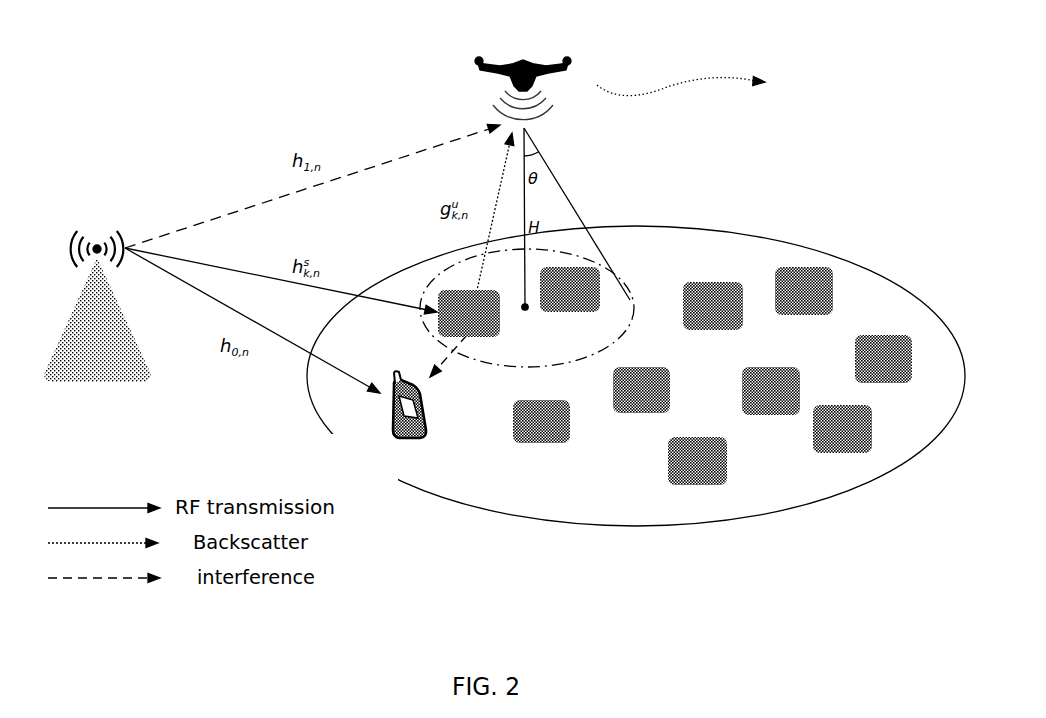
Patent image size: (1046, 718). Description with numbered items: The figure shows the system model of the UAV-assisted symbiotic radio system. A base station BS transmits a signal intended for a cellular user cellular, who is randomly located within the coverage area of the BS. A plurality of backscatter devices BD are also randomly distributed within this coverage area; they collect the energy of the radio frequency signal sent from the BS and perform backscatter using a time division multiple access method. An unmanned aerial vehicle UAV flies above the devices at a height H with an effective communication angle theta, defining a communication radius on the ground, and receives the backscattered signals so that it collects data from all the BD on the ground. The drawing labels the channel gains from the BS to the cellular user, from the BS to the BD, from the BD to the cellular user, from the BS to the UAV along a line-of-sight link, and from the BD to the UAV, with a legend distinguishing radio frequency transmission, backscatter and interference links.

The unmanned aerial vehicle UAV is at (523, 76).
The base station BS is at (97, 327).
The backscatter device BD is at (675, 376).
The cellular user cellular is at (399, 419).